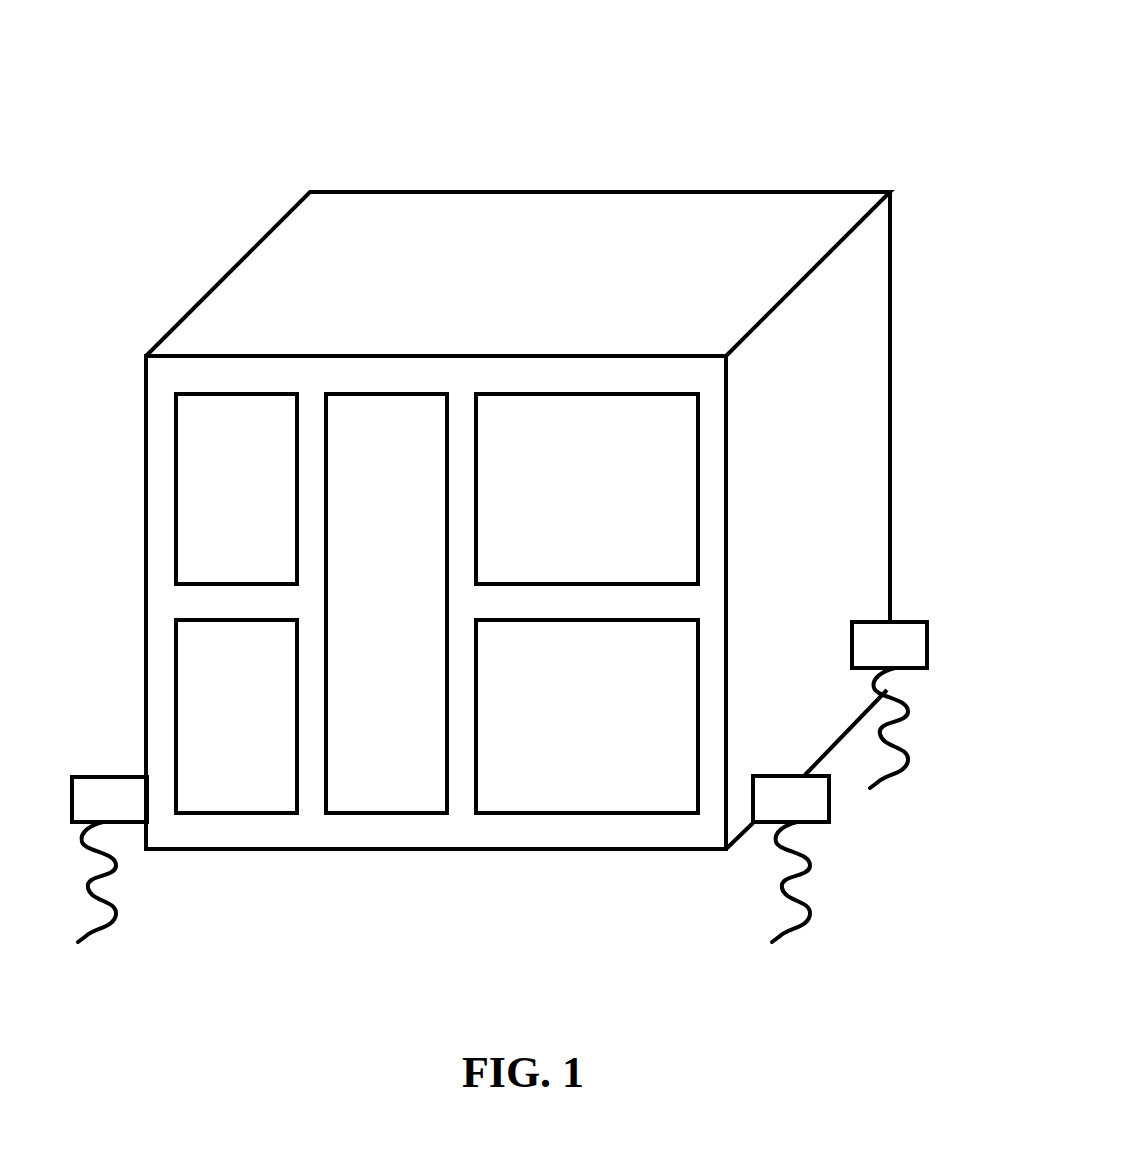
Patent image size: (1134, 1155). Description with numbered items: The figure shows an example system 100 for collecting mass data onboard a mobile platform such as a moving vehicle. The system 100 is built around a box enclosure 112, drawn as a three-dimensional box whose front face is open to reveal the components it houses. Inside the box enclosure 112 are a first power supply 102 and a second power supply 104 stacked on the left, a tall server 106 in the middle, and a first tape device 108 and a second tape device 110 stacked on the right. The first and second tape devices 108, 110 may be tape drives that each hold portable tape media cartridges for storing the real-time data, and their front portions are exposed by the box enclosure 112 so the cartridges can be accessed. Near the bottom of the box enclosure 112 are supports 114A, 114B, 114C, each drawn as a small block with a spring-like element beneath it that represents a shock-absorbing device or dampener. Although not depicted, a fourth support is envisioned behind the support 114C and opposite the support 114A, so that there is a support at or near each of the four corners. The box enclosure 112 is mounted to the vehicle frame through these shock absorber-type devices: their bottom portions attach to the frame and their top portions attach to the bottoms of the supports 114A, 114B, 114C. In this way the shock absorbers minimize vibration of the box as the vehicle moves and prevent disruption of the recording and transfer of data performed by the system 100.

The system 100 is at (658, 155).
The first power supply 102 is at (236, 489).
The second power supply 104 is at (236, 716).
The server 106 is at (386, 603).
The first tape device 108 is at (587, 489).
The second tape device 110 is at (587, 716).
The box enclosure 112 is at (335, 193).
The support 114A is at (907, 620).
The support 114B is at (778, 775).
The support 114C is at (87, 773).